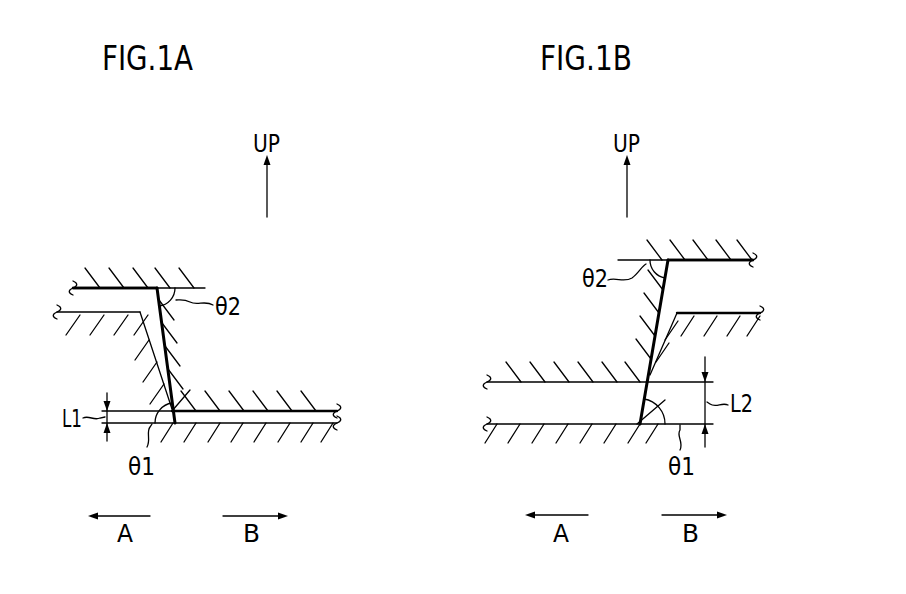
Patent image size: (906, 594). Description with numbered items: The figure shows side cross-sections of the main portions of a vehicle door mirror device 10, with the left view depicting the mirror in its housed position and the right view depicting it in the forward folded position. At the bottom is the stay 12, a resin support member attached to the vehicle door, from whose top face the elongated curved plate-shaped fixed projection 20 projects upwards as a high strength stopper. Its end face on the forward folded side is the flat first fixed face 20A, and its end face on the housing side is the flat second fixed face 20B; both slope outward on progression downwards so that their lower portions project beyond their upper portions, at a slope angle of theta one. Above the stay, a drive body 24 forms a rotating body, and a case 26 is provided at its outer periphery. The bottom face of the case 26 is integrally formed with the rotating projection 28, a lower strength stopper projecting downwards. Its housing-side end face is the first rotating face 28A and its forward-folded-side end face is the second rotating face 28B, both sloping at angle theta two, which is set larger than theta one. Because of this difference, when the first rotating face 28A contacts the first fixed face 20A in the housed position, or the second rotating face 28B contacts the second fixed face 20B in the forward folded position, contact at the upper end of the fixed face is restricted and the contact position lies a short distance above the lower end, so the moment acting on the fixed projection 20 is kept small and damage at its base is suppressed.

In FIG. 1A, the vehicle door mirror device 10 is at (124, 173).
In FIG. 1B, the vehicle door mirror device 10 is at (536, 175).
In FIG. 1A, the stay 12 is at (262, 417).
In FIG. 1B, the stay 12 is at (519, 417).
In FIG. 1A, the fixed projection 20 is at (63, 311).
In FIG. 1B, the fixed projection 20 is at (700, 313).
In FIG. 1A, the first fixed face 20A is at (165, 332).
In FIG. 1B, the second fixed face 20B is at (660, 336).
In FIG. 1A, the drive body 24 is at (97, 345).
In FIG. 1B, the drive body 24 is at (721, 281).
In FIG. 1A, the case 26 is at (95, 296).
In FIG. 1B, the case 26 is at (688, 267).
In FIG. 1A, the rotating projection 28 is at (228, 412).
In FIG. 1B, the rotating projection 28 is at (567, 383).
In FIG. 1A, the first rotating face 28A is at (150, 347).
In FIG. 1B, the second rotating face 28B is at (673, 323).